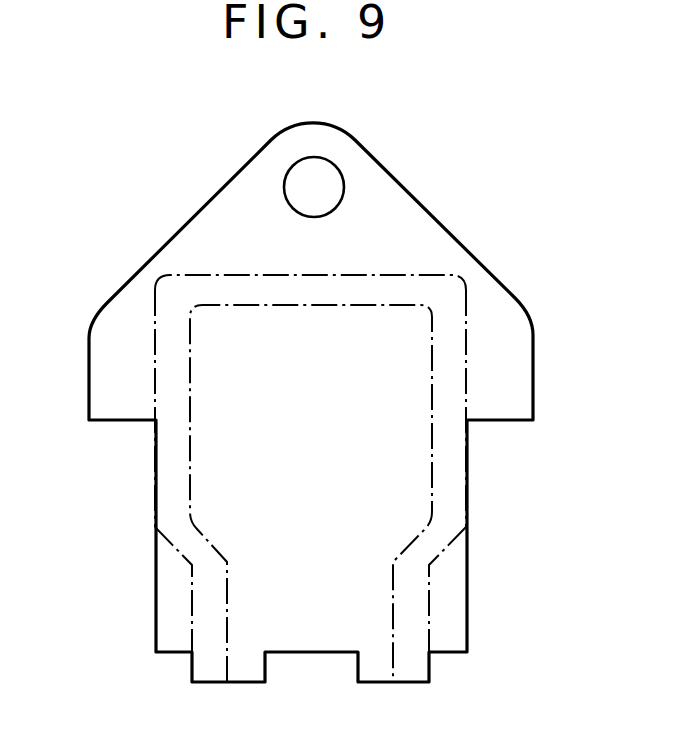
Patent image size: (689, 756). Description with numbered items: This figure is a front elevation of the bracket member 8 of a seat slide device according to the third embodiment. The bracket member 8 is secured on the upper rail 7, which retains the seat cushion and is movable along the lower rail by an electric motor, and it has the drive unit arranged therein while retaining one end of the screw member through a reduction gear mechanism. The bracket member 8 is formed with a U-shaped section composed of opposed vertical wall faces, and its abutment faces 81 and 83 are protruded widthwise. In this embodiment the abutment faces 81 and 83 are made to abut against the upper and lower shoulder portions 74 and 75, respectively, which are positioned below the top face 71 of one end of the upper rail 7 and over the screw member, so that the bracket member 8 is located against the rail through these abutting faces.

The bracket member 8 is at (403, 185).
The upper rail 7 is at (267, 273).
The top face 71 is at (340, 293).
The abutment face 81 is at (121, 373).
The upper shoulder portion 74 is at (450, 353).
The abutment face 83 is at (170, 607).
The lower shoulder portion 75 is at (410, 623).